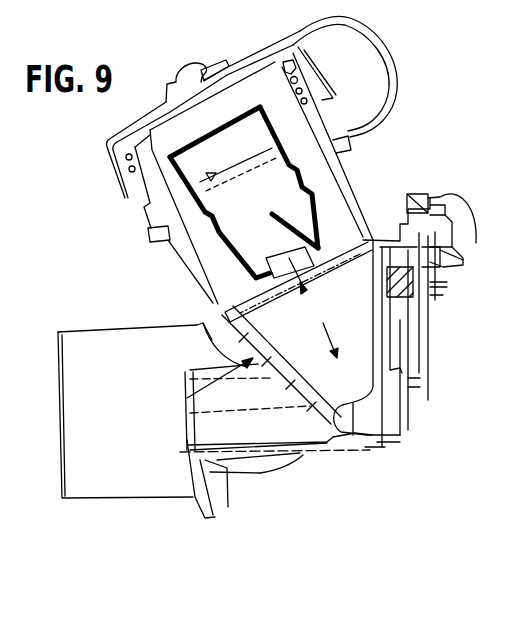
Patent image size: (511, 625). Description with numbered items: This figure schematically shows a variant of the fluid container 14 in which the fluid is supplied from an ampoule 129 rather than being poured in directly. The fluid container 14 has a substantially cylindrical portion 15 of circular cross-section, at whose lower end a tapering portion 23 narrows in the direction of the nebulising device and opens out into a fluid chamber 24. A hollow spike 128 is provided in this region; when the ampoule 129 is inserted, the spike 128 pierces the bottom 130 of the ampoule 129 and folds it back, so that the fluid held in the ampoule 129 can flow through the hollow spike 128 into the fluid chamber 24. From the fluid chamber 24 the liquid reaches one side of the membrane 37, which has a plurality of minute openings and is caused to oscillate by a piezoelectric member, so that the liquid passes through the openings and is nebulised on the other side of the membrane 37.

The fluid container 14 is at (428, 108).
The ampoule 129 is at (313, 193).
The cylindrical portion 15 is at (357, 208).
The spike 128 is at (252, 279).
The bottom 130 is at (270, 216).
The tapering portion 23 is at (212, 387).
The membrane 37 is at (405, 408).
The fluid chamber 24 is at (362, 418).